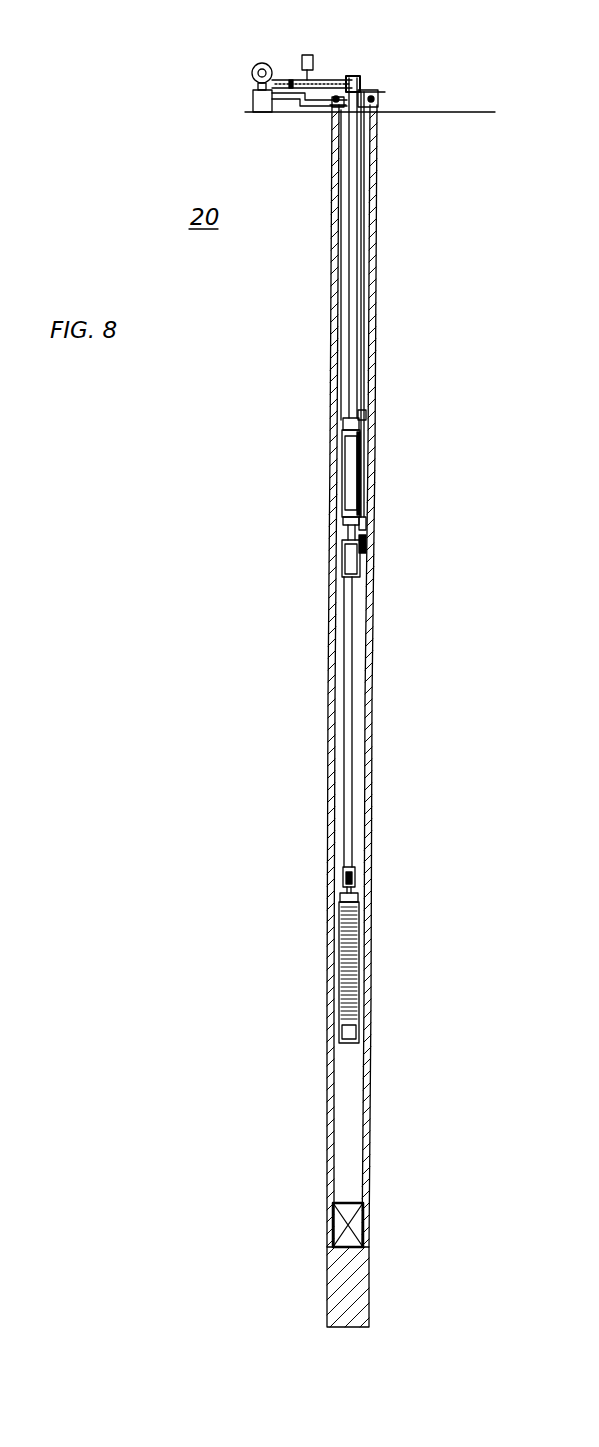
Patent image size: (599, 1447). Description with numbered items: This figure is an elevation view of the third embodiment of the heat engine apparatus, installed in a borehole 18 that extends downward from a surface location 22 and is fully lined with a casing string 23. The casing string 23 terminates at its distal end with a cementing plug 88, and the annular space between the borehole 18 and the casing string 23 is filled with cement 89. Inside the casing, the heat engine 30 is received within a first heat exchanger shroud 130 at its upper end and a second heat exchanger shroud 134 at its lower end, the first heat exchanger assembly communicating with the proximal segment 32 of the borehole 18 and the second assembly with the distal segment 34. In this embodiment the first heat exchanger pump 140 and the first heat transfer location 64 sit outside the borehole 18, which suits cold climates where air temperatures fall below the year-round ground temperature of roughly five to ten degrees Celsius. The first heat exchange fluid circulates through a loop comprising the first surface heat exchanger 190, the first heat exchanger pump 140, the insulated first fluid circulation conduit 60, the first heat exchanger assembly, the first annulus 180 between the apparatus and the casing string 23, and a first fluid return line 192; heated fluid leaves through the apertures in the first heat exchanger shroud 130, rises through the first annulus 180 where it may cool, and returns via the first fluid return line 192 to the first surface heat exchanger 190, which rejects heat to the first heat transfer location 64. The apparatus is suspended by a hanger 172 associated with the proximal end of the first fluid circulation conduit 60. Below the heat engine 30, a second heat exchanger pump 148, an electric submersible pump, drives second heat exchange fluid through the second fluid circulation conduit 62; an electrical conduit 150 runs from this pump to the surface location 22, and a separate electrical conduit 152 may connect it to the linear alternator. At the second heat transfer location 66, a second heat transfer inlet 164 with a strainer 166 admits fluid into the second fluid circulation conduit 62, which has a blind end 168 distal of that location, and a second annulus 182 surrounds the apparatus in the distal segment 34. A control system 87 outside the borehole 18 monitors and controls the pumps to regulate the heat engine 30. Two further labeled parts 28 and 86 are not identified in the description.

The borehole 18 is at (380, 217).
The surface location 22 is at (212, 57).
The casing string 23 is at (370, 288).
The pump 28 is at (342, 492).
The heat engine 30 is at (357, 485).
The proximal segment 32 is at (400, 323).
The distal segment 34 is at (390, 808).
The first fluid circulation conduit 60 is at (312, 80).
The second fluid circulation conduit 62 is at (350, 705).
The first heat transfer location 64 is at (252, 106).
The second heat transfer location 66 is at (360, 911).
The cable 86 is at (386, 92).
The control system 87 is at (307, 55).
The cementing plug 88 is at (350, 1223).
The cement 89 is at (372, 256).
The first heat exchanger shroud 130 is at (341, 455).
The second heat exchanger shroud 134 is at (342, 522).
The first heat exchanger pump 140 is at (262, 62).
The second heat exchanger pump 148 is at (343, 566).
The electrical conduit 150 is at (397, 96).
The separate electrical conduit 152 is at (366, 521).
The second heat transfer inlet 164 is at (355, 945).
The strainer 166 is at (356, 988).
The blind end 168 is at (350, 1033).
The hanger 172 is at (334, 115).
The first annulus 180 is at (340, 183).
The second annulus 182 is at (355, 757).
The first surface heat exchanger 190 is at (252, 97).
The first fluid return line 192 is at (351, 82).